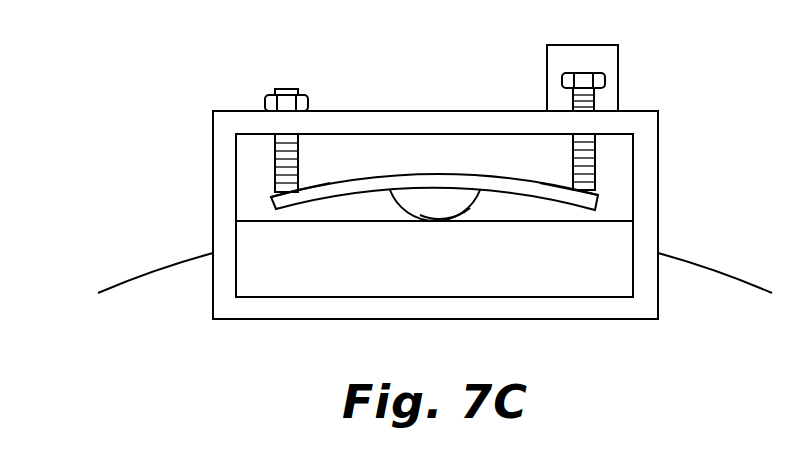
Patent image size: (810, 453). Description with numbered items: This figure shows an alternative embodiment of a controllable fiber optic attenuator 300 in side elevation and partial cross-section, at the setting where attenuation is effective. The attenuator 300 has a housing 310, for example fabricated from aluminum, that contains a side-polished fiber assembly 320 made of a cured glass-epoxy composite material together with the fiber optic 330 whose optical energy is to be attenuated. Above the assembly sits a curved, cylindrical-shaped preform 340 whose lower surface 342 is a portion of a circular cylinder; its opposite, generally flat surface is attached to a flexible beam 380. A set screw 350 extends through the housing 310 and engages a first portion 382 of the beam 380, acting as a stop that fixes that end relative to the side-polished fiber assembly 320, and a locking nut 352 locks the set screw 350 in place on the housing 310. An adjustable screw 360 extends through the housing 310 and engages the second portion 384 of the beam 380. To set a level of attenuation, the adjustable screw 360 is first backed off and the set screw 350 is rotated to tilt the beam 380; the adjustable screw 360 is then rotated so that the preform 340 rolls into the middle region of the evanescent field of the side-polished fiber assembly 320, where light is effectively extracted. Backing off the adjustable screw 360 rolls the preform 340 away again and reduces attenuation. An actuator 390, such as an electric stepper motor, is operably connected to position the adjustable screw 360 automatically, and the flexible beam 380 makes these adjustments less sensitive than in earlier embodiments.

The attenuator 300 is at (133, 98).
The housing 310 is at (651, 150).
The side-polished fiber assembly 320 is at (555, 282).
The fiber optic 330 is at (737, 278).
The preform 340 is at (436, 198).
The surface 342 is at (470, 208).
The set screw 350 is at (293, 80).
The locking nut 352 is at (266, 104).
The adjustable screw 360 is at (598, 82).
The flexible beam 380 is at (502, 168).
The first portion 382 is at (310, 192).
The second portion 384 is at (555, 192).
The actuator 390 is at (583, 58).